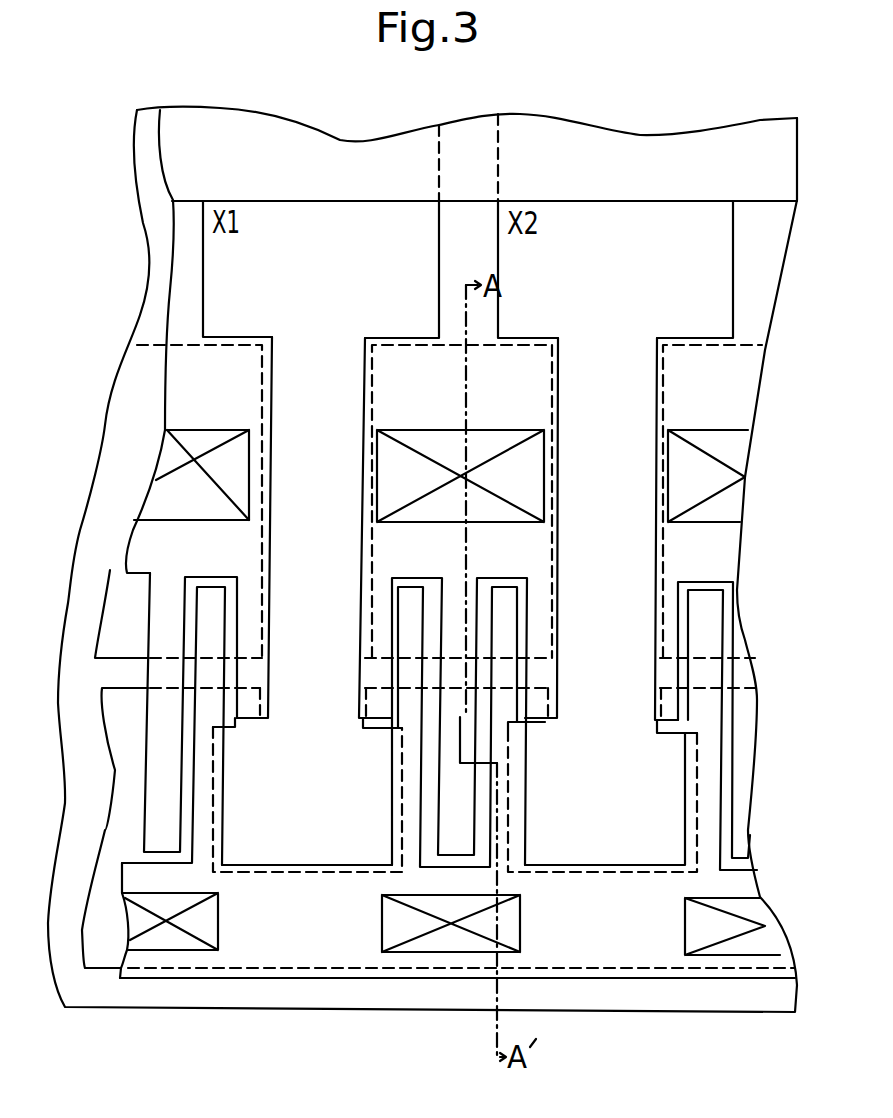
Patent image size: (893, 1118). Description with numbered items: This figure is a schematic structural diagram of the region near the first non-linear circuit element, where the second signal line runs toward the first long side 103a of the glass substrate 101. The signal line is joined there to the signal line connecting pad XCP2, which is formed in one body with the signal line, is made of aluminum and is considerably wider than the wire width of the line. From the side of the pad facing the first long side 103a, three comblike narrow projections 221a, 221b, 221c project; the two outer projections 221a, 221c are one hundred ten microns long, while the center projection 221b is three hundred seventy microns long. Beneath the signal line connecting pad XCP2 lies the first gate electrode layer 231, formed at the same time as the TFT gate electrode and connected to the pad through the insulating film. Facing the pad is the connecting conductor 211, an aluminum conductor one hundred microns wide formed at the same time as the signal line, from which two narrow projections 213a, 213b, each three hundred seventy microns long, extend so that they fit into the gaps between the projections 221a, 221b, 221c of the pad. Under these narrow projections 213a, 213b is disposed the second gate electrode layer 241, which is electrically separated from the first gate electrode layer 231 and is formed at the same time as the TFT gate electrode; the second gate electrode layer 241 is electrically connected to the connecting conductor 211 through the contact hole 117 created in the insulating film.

The glass substrate 101 is at (70, 620).
The first long side 103a is at (545, 1012).
The contact hole 117 is at (210, 918).
The connecting conductor 211 is at (657, 960).
The narrow projection 213a is at (394, 803).
The narrow projection 213b is at (517, 809).
The narrow projection 221a is at (364, 585).
The narrow projection 221b is at (468, 598).
The narrow projection 221c is at (556, 614).
The first gate electrode layer 231 is at (540, 661).
The second gate electrode layer 241 is at (525, 733).
The signal line connecting pad XCP2 is at (558, 388).